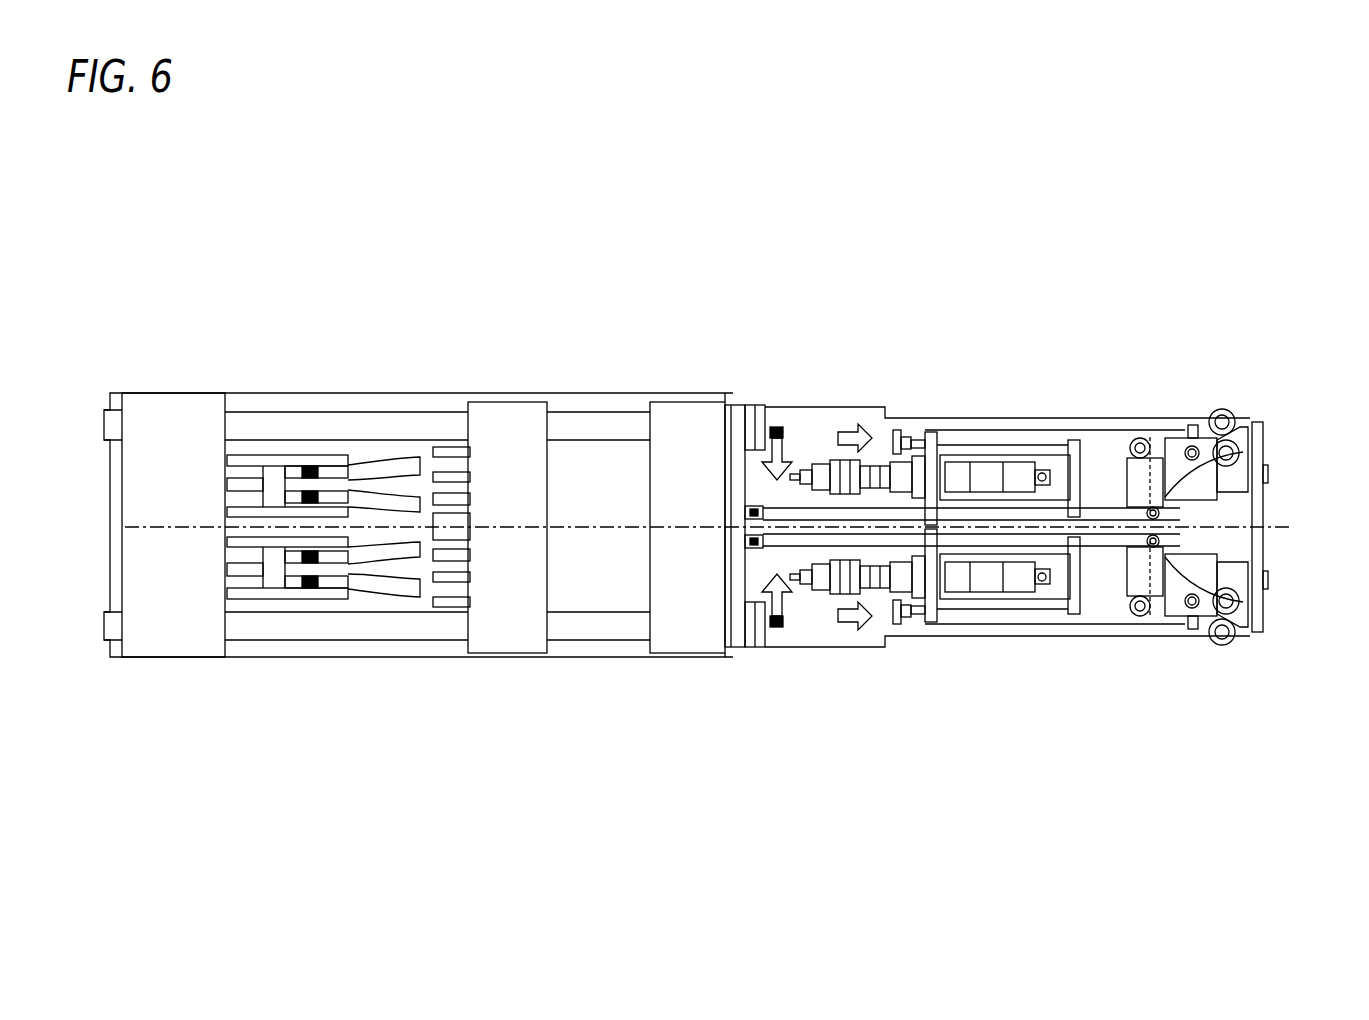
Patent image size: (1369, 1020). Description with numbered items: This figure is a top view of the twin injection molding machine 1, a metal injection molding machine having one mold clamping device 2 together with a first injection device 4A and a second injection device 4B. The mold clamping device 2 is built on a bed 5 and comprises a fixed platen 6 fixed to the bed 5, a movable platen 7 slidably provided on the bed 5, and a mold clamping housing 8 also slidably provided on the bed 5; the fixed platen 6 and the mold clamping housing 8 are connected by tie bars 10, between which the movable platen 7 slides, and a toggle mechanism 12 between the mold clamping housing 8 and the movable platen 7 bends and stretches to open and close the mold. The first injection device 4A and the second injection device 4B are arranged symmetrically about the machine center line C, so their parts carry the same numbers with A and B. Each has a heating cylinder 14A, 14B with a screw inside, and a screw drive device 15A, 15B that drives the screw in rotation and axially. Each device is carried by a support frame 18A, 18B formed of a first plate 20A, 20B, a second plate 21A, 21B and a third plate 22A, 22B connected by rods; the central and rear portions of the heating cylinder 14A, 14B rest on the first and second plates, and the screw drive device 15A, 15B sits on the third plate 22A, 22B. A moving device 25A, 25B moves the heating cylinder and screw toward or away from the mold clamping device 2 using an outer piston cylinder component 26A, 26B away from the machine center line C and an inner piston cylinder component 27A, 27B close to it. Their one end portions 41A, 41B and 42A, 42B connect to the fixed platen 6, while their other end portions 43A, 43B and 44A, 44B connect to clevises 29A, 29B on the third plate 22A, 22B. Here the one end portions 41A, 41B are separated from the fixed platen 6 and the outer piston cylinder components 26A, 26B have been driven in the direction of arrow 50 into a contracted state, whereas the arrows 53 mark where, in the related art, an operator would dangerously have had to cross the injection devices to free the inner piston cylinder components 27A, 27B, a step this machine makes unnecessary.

The twin injection molding machine 1 is at (1297, 200).
The mold clamping device 2 is at (690, 308).
The first injection device 4A is at (1192, 744).
The second injection device 4B is at (1220, 304).
The bed 5 is at (593, 393).
The fixed platen 6 is at (685, 402).
The movable platen 7 is at (505, 402).
The mold clamping housing 8 is at (170, 393).
The tie bars 10 is at (440, 412).
The toggle mechanism 12 is at (342, 440).
The heating cylinder 14A is at (972, 636).
The heating cylinder 14B is at (975, 418).
The screw drive device 15A is at (1212, 645).
The screw drive device 15B is at (1215, 412).
The support frame 18A is at (1085, 642).
The support frame 18B is at (1080, 396).
The first plate 20A is at (928, 622).
The first plate 20B is at (928, 432).
The second plate 21A is at (1072, 614).
The second plate 21B is at (1072, 440).
The third plate 22A is at (1130, 596).
The third plate 22B is at (1130, 458).
The moving device 25A is at (898, 665).
The moving device 25B is at (817, 365).
The outer piston cylinder component 26A is at (1012, 636).
The outer piston cylinder component 26B is at (1012, 418).
The inner piston cylinder component 27A is at (752, 647).
The inner piston cylinder component 27B is at (752, 405).
The clevises 29A is at (1160, 617).
The clevises 29B is at (1170, 437).
The one end portion 41A is at (882, 630).
The one end portion 41B is at (882, 426).
The one end portion 42A is at (745, 540).
The one end portion 42B is at (745, 512).
The other end portion 43A is at (1148, 617).
The other end portion 43B is at (1148, 437).
The other end portion 44A is at (1243, 602).
The other end portion 44B is at (1243, 452).
The arrow 50 is at (822, 424).
The arrows 53 is at (778, 427).
The machine center line C is at (572, 527).